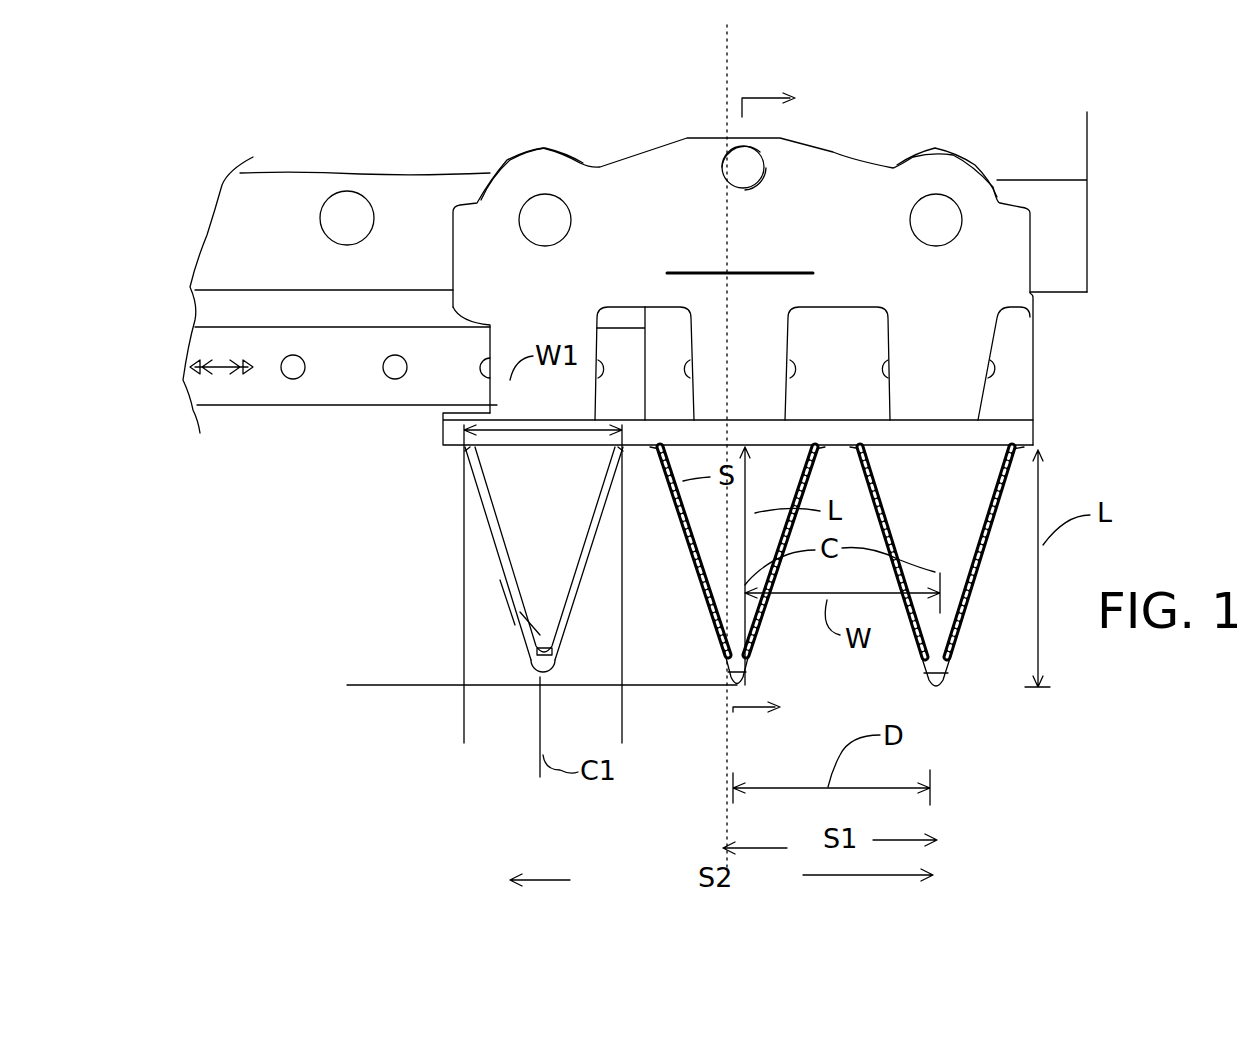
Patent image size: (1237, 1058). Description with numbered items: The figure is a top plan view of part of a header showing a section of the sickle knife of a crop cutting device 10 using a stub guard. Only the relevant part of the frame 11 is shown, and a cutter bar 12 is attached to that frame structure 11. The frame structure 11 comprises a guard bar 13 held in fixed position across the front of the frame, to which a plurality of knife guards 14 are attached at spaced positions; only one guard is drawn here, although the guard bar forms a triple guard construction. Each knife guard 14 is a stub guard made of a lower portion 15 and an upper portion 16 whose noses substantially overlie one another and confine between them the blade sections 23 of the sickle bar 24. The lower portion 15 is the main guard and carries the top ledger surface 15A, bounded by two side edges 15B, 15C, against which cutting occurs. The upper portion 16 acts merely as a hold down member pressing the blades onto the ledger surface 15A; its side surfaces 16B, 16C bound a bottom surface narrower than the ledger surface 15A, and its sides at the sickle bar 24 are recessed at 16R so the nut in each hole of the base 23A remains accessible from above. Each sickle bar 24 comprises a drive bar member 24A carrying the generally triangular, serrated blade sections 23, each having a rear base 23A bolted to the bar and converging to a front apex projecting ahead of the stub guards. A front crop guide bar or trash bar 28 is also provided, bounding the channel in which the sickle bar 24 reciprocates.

The crop cutting device 10 is at (1112, 384).
The frame 11 is at (1082, 175).
The cutter bar 12 is at (1063, 228).
The guard bar 13 is at (270, 213).
The knife guard 14 is at (855, 181).
The lower portion 15 is at (517, 678).
The ledger surface 15A is at (410, 684).
The side edge of ledger surface 15B is at (503, 595).
The side edge of ledger surface 15C is at (553, 680).
The upper portion 16 is at (741, 611).
The side surface of hold down member 16B is at (497, 513).
The side surface of hold down member 16C is at (587, 534).
The recess 16R is at (788, 340).
The blade section 23 is at (720, 550).
The base 23A is at (658, 340).
The sickle bar 24 is at (422, 353).
The drive bar member 24A is at (323, 387).
The front crop guide bar 28 is at (1013, 433).